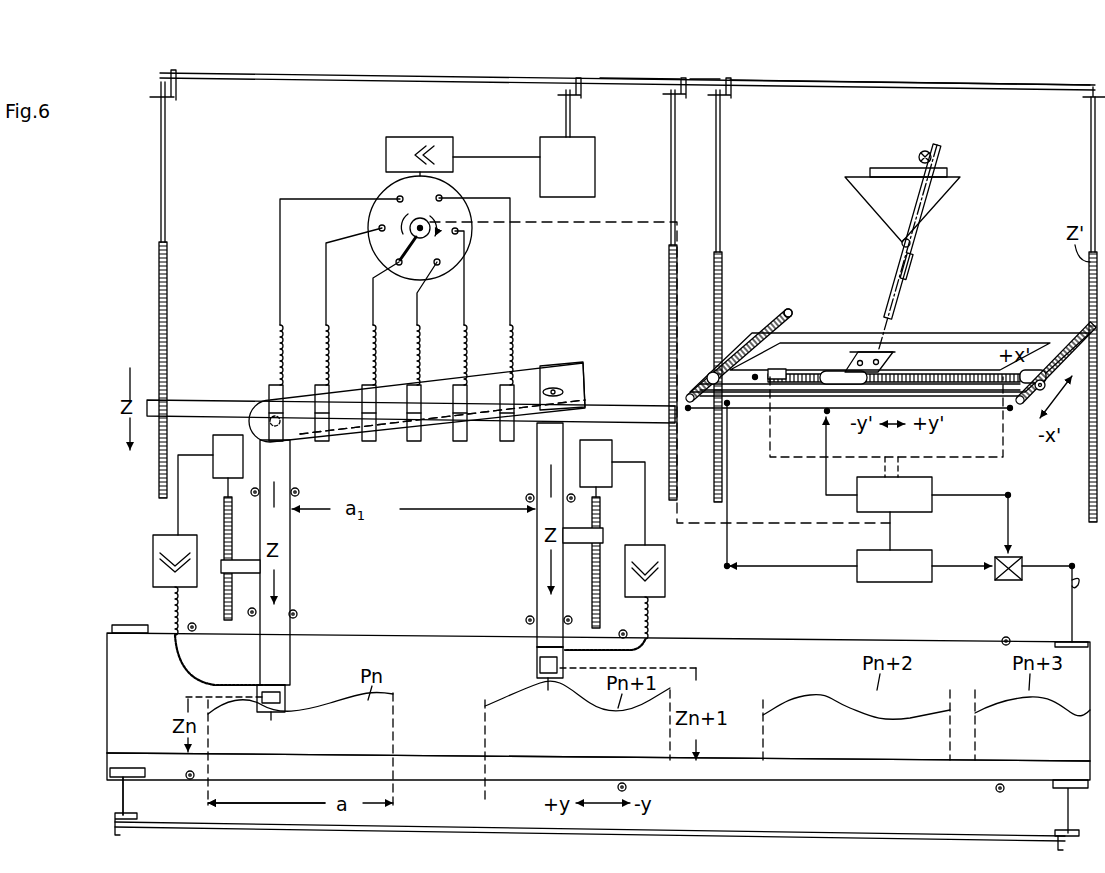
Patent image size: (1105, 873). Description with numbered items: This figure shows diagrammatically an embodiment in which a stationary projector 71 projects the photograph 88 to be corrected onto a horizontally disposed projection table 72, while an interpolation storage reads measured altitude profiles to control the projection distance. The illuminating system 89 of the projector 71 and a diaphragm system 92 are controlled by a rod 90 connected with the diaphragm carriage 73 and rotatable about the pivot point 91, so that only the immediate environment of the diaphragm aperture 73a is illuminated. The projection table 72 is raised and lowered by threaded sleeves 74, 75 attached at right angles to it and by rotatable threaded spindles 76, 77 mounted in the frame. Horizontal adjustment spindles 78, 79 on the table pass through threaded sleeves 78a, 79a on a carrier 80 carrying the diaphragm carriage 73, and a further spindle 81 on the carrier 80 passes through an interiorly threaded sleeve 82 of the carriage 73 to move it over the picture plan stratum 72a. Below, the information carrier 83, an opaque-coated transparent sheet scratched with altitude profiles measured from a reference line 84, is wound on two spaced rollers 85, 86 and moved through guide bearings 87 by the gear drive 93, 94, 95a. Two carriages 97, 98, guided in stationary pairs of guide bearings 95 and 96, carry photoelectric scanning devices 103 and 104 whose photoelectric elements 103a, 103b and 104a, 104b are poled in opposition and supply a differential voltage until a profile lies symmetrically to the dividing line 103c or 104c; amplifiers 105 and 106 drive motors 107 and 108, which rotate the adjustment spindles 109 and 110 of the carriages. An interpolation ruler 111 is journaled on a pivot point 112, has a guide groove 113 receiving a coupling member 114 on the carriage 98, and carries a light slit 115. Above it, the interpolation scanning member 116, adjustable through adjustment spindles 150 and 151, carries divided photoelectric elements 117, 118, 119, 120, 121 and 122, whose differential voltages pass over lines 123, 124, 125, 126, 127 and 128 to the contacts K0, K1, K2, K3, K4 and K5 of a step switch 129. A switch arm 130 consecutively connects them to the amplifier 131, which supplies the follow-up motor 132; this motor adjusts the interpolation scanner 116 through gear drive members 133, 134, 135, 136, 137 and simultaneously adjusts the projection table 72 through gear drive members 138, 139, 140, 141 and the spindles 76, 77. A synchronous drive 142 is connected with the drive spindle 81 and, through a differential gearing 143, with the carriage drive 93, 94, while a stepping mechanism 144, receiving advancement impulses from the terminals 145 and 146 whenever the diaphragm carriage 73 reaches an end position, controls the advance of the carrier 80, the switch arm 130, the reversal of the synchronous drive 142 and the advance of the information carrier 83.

The projector 71 is at (935, 196).
The projection table 72 is at (943, 332).
The picture plan stratum 72a is at (960, 342).
The diaphragm carriage 73 is at (850, 364).
The diaphragm aperture 73a is at (866, 350).
The threaded sleeve 74 is at (1060, 395).
The threaded sleeve 75 is at (710, 372).
The threaded spindle 76 is at (1090, 455).
The threaded spindle 77 is at (722, 270).
The horizontal adjustment spindle 78 is at (787, 318).
The threaded sleeve 78a is at (728, 337).
The horizontal adjustment spindle 79 is at (1075, 328).
The threaded sleeve 79a is at (1043, 392).
The carrier 80 is at (745, 405).
The horizontal threaded adjustment spindle 81 is at (972, 398).
The interiorly threaded sleeve 82 is at (830, 386).
The information carrier 83 is at (743, 763).
The reference line 84 is at (170, 752).
The roller 85 is at (1065, 640).
The roller 86 is at (123, 624).
The guide bearings 87 is at (193, 622).
The photograph 88 is at (890, 168).
The illuminating system 89 is at (921, 152).
The rod 90 is at (900, 282).
The pivot point 91 is at (911, 243).
The diaphragm system 92 is at (890, 257).
The gear drive member 93 is at (1060, 583).
The gear drive member 94 is at (790, 800).
The guide bearings 95 is at (297, 490).
The gear drive member 95a is at (122, 800).
The guide bearings 96 is at (527, 495).
The carriage 97 is at (283, 570).
The carriage 98 is at (536, 547).
The photoelectric scanning device 103 is at (283, 688).
The photoelectric element 103a is at (282, 685).
The photoelectric element 103b is at (275, 703).
The dividing line 103c is at (281, 697).
The photoelectric scanning device 104 is at (535, 645).
The photoelectric element 104a is at (538, 658).
The photoelectric element 104b is at (548, 690).
The dividing line 104c is at (540, 668).
The amplifier 105 is at (160, 542).
The amplifier 106 is at (660, 555).
The motor 107 is at (215, 448).
The motor 108 is at (598, 452).
The adjustment spindle 109 is at (223, 528).
The adjustment spindle 110 is at (600, 545).
The interpolation ruler 111 is at (390, 432).
The pivot point 112 is at (272, 418).
The guide groove 113 is at (563, 390).
The coupling member 114 is at (560, 372).
The slit 115 is at (490, 422).
The interpolation scanning member 116 is at (168, 403).
The divided photoelectric element 117 is at (278, 385).
The divided photoelectric element 118 is at (324, 385).
The divided photoelectric element 119 is at (371, 385).
The divided photoelectric element 120 is at (416, 385).
The divided photoelectric element 121 is at (462, 385).
The divided photoelectric element 122 is at (512, 385).
The line 123 is at (279, 298).
The line 124 is at (325, 298).
The line 125 is at (372, 298).
The line 126 is at (416, 298).
The line 127 is at (463, 298).
The line 128 is at (509, 298).
The step switch 129 is at (445, 184).
The switch arm 130 is at (411, 241).
The amplifier 131 is at (421, 136).
The follow-up motor 132 is at (583, 153).
The gear drive member 133 is at (565, 107).
The gear drive member 134 is at (331, 80).
The gear drive member 135 is at (160, 152).
The gear drive member 136 is at (618, 84).
The gear drive member 137 is at (700, 148).
The gear drive member 138 is at (703, 86).
The gear drive member 139 is at (745, 148).
The gear drive member 140 is at (857, 87).
The gear drive member 141 is at (1092, 152).
The synchronous drive 142 is at (920, 560).
The differential gearing 143 is at (1022, 563).
The stepping mechanism 144 is at (925, 492).
The terminal 145 is at (790, 363).
The terminal 146 is at (1022, 374).
The adjustment spindle 150 is at (167, 300).
The adjustment spindle 151 is at (668, 300).
The contact K0 is at (397, 197).
The contact K1 is at (379, 226).
The contact K2 is at (396, 266).
The contact K3 is at (440, 264).
The contact K4 is at (458, 231).
The contact K5 is at (442, 196).